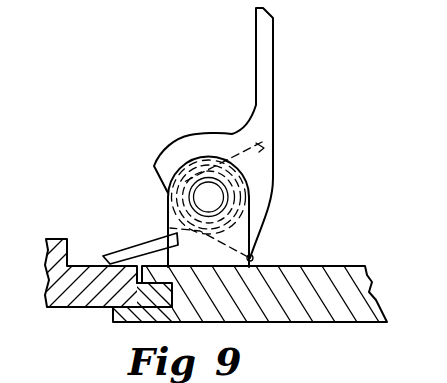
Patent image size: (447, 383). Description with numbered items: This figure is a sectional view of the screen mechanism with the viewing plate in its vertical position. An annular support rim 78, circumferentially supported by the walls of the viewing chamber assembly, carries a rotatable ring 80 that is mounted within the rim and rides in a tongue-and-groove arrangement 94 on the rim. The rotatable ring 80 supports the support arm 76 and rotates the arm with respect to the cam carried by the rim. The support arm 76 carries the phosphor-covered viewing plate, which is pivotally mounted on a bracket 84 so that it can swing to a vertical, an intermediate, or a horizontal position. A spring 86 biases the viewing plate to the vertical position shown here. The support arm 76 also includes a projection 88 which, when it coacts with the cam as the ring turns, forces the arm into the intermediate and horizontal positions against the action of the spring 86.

The support arm 76 is at (187, 142).
The support rim 78 is at (55, 238).
The rotatable ring 80 is at (328, 314).
The bracket 84 is at (255, 237).
The spring 86 is at (254, 146).
The projection 88 is at (127, 252).
The tongue-and-groove arrangement 94 is at (180, 300).